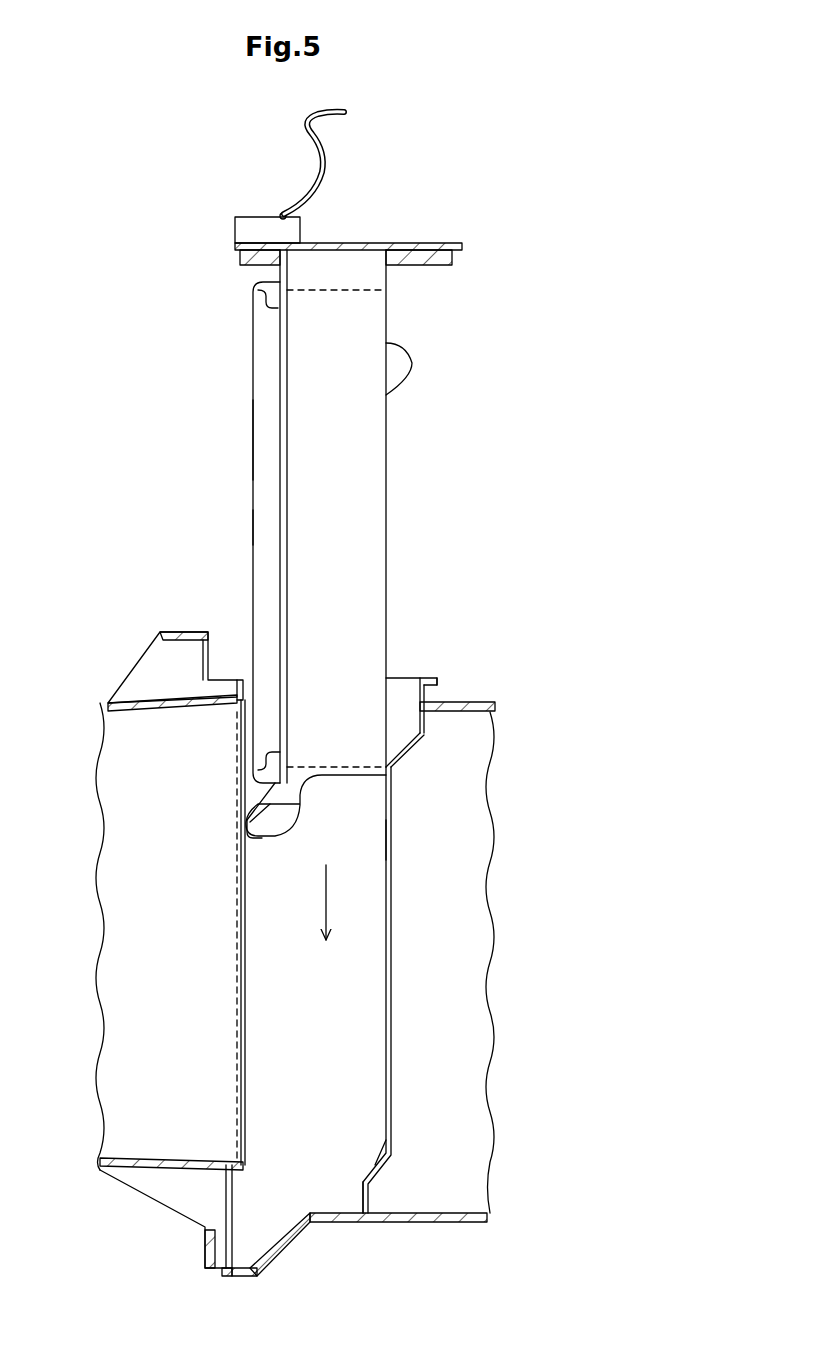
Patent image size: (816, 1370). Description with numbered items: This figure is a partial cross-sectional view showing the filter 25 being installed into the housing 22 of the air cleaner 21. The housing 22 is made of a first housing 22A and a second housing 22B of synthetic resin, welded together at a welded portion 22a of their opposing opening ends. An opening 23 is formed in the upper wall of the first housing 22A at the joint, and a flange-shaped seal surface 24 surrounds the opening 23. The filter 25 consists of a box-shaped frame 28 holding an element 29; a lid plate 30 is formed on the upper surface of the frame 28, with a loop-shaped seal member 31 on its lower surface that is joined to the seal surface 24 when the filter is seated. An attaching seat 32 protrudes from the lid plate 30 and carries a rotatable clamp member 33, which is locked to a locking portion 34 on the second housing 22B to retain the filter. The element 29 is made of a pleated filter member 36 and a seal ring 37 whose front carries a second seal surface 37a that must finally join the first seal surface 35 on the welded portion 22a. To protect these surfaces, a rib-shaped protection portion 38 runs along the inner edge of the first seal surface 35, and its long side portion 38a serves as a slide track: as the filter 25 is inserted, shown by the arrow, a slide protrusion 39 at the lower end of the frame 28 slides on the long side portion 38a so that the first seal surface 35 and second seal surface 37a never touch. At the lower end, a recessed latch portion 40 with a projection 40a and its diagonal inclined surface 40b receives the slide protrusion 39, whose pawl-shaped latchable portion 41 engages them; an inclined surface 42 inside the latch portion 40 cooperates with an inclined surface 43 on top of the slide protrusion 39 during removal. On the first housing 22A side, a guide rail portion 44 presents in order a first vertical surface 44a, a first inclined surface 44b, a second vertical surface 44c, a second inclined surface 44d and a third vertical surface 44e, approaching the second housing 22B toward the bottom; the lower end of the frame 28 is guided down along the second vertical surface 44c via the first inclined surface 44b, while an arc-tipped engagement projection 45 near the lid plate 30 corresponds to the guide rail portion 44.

The air cleaner 21 is at (493, 849).
The housing 22 is at (493, 905).
The first housing 22A is at (441, 1222).
The second housing 22B is at (182, 1168).
The welded portion 22a is at (228, 1277).
The opening 23 is at (416, 678).
The seal surface 24 is at (436, 678).
The filter 25 is at (342, 496).
The frame 28 is at (386, 492).
The element 29 is at (263, 437).
The lid plate 30 is at (428, 243).
The seal member 31 is at (454, 255).
The attaching seat 32 is at (300, 225).
The clamp member 33 is at (324, 173).
The locking portion 34 is at (170, 631).
The first seal surface 35 is at (235, 679).
The filter member 36 is at (374, 288).
The seal ring 37 is at (263, 480).
The second seal surface 37a is at (260, 523).
The protection portion 38 is at (248, 696).
The long side portion 38a is at (232, 946).
The slide protrusion 39 is at (243, 822).
The latch portion 40 is at (205, 1252).
The projection 40a is at (246, 1275).
The inclined surface 40b is at (271, 1236).
The latchable portion 41 is at (266, 840).
The inclined surface 42 is at (230, 1226).
The inclined surface 43 is at (247, 798).
The guide rail portion 44 is at (387, 919).
The first vertical surface 44a is at (414, 730).
The first inclined surface 44b is at (392, 766).
The second vertical surface 44c is at (392, 842).
The second inclined surface 44d is at (380, 1170).
The third vertical surface 44e is at (366, 1202).
The engagement projection 45 is at (406, 364).